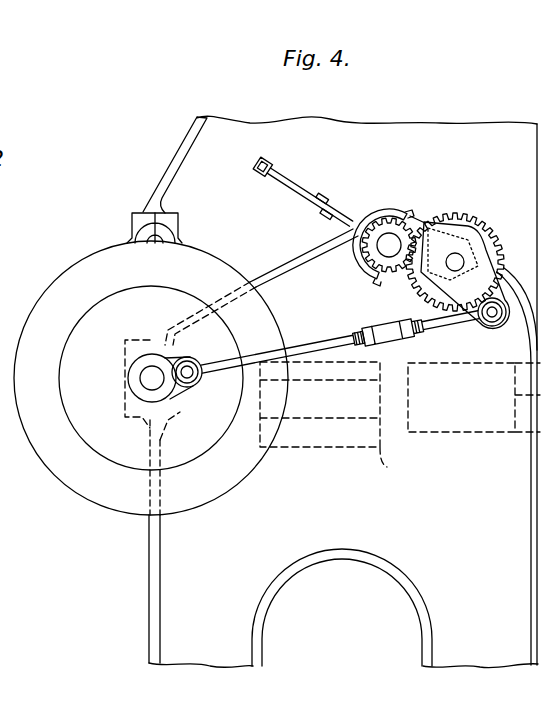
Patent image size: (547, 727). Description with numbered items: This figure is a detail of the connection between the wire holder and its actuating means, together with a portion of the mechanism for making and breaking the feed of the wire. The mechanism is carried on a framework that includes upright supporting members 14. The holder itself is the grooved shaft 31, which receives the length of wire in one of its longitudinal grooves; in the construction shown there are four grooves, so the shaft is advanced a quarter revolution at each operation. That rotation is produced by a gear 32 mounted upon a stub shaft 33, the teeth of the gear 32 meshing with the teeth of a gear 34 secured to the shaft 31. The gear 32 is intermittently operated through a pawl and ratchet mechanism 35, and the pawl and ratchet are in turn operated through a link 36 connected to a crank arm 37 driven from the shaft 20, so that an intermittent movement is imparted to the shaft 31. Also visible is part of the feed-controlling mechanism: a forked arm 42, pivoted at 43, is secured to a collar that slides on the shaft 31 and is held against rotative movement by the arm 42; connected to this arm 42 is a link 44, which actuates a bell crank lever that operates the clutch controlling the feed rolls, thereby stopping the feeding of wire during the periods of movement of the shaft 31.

The upright supporting members 14 is at (184, 154).
The shaft 20 is at (144, 380).
The shaft 31 is at (388, 245).
The gear 32 is at (476, 213).
The stub shaft 33 is at (459, 262).
The gear 34 is at (378, 220).
The pawl and ratchet mechanism 35 is at (443, 208).
The link 36 is at (309, 342).
The crank arm 37 is at (168, 392).
The forked arm 42 is at (308, 193).
The pivot 43 is at (333, 201).
The link 44 is at (272, 165).